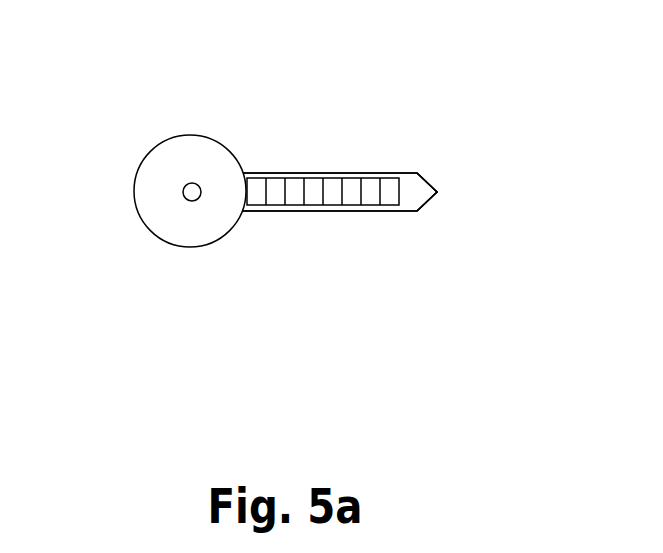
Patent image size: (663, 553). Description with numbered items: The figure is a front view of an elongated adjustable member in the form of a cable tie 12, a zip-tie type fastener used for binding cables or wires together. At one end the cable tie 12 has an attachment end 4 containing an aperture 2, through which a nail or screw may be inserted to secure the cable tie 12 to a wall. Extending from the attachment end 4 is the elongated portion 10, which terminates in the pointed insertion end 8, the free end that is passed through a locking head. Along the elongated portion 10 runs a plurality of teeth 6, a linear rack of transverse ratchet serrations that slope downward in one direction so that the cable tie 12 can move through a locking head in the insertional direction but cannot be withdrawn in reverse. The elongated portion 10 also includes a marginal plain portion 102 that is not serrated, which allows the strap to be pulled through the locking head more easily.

The cable tie 12 is at (156, 81).
The aperture 2 is at (191, 184).
The attachment end 4 is at (231, 150).
The teeth 6 is at (323, 193).
The insertion end 8 is at (428, 203).
The elongated portion 10 is at (397, 212).
The marginal plain portion 102 is at (377, 172).